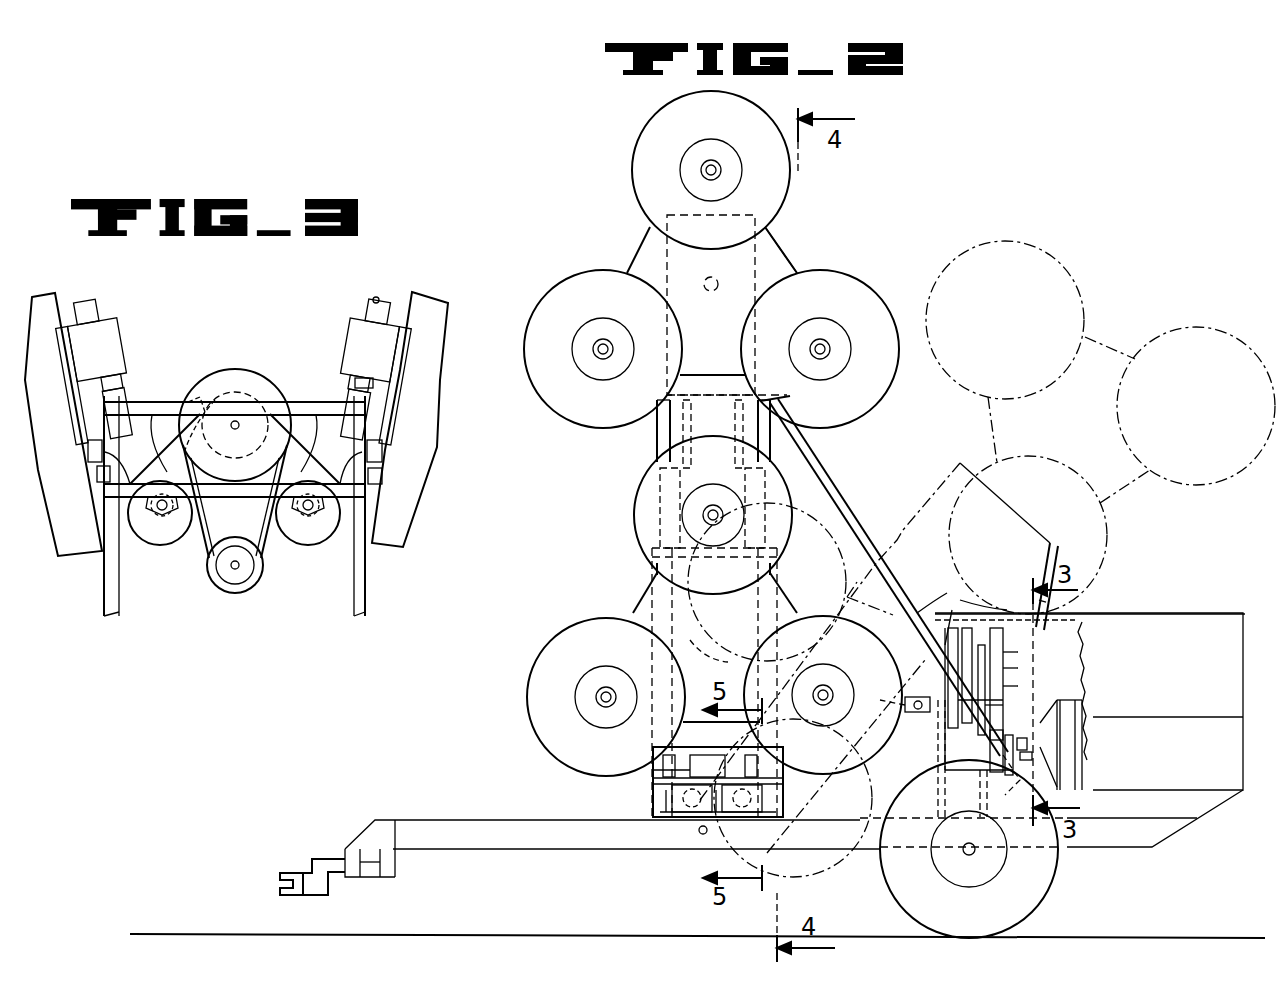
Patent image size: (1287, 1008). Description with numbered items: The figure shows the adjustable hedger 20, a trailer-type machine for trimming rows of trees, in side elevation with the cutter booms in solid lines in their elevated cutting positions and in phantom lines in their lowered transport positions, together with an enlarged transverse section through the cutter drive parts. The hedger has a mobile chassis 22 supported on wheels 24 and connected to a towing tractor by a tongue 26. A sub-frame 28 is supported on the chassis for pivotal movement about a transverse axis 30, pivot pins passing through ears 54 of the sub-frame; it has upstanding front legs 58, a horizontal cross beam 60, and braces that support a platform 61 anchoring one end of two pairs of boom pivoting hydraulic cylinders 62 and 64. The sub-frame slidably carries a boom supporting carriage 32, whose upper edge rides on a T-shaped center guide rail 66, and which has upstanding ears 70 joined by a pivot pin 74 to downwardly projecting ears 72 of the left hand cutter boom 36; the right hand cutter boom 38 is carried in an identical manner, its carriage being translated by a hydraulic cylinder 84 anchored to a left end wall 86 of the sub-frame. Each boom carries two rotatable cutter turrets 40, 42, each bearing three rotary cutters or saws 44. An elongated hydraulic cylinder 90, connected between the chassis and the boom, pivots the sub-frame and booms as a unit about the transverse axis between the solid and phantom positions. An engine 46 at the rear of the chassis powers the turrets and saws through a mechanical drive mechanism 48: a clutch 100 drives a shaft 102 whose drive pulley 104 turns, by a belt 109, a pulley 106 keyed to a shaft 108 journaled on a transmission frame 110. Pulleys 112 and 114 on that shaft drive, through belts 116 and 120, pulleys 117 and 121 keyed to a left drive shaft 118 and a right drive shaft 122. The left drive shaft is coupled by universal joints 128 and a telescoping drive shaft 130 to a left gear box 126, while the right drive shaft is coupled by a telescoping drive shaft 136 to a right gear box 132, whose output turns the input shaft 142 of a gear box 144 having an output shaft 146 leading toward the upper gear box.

In FIG. 2, the adjustable hedger 20 is at (980, 180).
In FIG. 2, the mobile chassis 22 is at (486, 813).
In FIG. 2, the wheels 24 is at (1060, 866).
In FIG. 2, the tongue 26 is at (306, 872).
In FIG. 2, the sub-frame 28 is at (652, 577).
In FIG. 2, the transverse axis 30 is at (685, 821).
In FIG. 2, the boom supporting carriage 32 is at (758, 802).
In FIG. 2, the left hand cutter boom 36 is at (770, 251).
In FIG. 3, the left hand cutter boom 36 is at (37, 296).
In FIG. 3, the right hand cutter boom 38 is at (424, 294).
In FIG. 2, the cutter turret 40 is at (650, 244).
In FIG. 2, the cutter turret 42 is at (633, 612).
In FIG. 2, the rotary cutters or saws 44 is at (632, 155).
In FIG. 2, the engine 46 is at (1086, 771).
In FIG. 2, the mechanical drive mechanism 48 is at (1010, 636).
In FIG. 3, the mechanical drive mechanism 48 is at (208, 376).
In FIG. 2, the ears 54 is at (700, 840).
In FIG. 2, the front legs 58 is at (652, 568).
In FIG. 2, the horizontal cross beam 60 is at (829, 553).
In FIG. 2, the platform 61 is at (742, 560).
In FIG. 2, the boom pivoting hydraulic cylinders 62 is at (737, 440).
In FIG. 2, the boom pivoting hydraulic cylinders 64 is at (657, 440).
In FIG. 2, the T-shaped center guide rail 66 is at (760, 790).
In FIG. 2, the upstanding ears 70 is at (745, 760).
In FIG. 2, the downwardly projecting ears 72 is at (668, 756).
In FIG. 2, the pivot pin 74 is at (653, 770).
In FIG. 2, the hydraulic cylinder 84 is at (665, 790).
In FIG. 2, the left end wall 86 is at (672, 806).
In FIG. 2, the elongated hydraulic cylinder 90 is at (903, 596).
In FIG. 2, the clutch 100 is at (1032, 755).
In FIG. 2, the shaft 102 is at (1027, 740).
In FIG. 3, the shaft 102 is at (231, 568).
In FIG. 2, the drive pulley 104 is at (982, 775).
In FIG. 3, the drive pulley 104 is at (237, 594).
In FIG. 2, the pulley 106 is at (1018, 668).
In FIG. 3, the pulley 106 is at (228, 370).
In FIG. 2, the shaft 108 is at (1018, 652).
In FIG. 3, the shaft 108 is at (237, 422).
In FIG. 2, the belt 109 is at (1000, 686).
In FIG. 3, the belt 109 is at (272, 572).
In FIG. 3, the transmission frame 110 is at (103, 592).
In FIG. 2, the pulley 112 is at (973, 612).
In FIG. 3, the pulley 112 is at (196, 390).
In FIG. 2, the pulley 114 is at (952, 613).
In FIG. 3, the belt 116 is at (153, 412).
In FIG. 3, the pulley 117 is at (148, 530).
In FIG. 2, the left drive shaft 118 is at (990, 705).
In FIG. 3, the left drive shaft 118 is at (165, 515).
In FIG. 3, the belt 120 is at (314, 414).
In FIG. 3, the pulley 121 is at (309, 515).
In FIG. 3, the right drive shaft 122 is at (311, 530).
In FIG. 3, the left gear box 126 is at (98, 452).
In FIG. 2, the universal joints 128 is at (918, 712).
In FIG. 2, the telescoping drive shaft 130 is at (868, 671).
In FIG. 3, the telescoping drive shaft 130 is at (130, 473).
In FIG. 3, the right gear box 132 is at (380, 448).
In FIG. 3, the telescoping drive shaft 136 is at (337, 473).
In FIG. 3, the input shaft 142 is at (356, 382).
In FIG. 3, the gear box 144 is at (350, 337).
In FIG. 3, the output shaft 146 is at (373, 298).